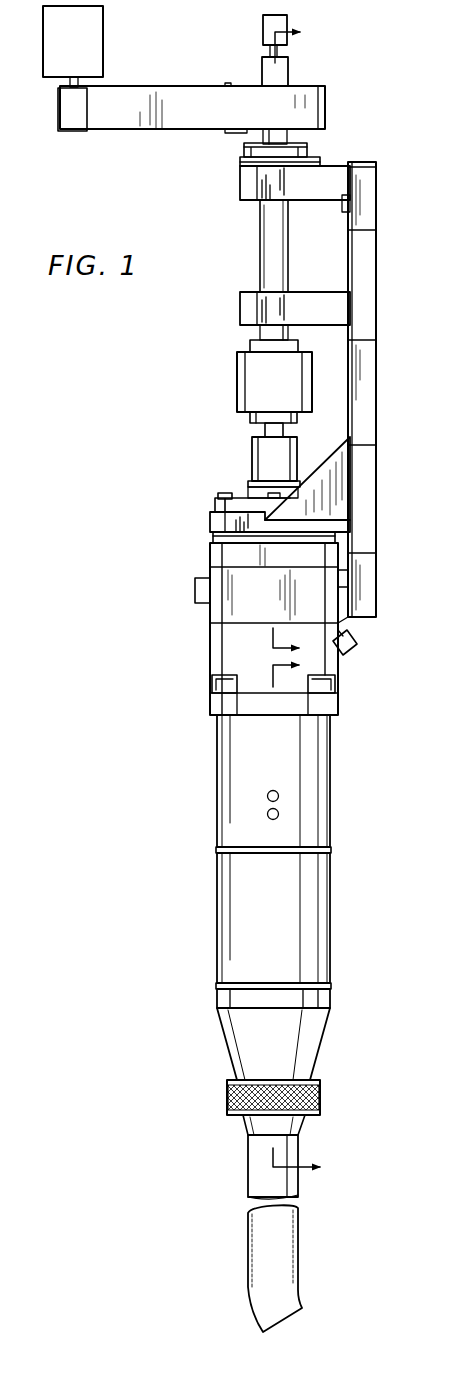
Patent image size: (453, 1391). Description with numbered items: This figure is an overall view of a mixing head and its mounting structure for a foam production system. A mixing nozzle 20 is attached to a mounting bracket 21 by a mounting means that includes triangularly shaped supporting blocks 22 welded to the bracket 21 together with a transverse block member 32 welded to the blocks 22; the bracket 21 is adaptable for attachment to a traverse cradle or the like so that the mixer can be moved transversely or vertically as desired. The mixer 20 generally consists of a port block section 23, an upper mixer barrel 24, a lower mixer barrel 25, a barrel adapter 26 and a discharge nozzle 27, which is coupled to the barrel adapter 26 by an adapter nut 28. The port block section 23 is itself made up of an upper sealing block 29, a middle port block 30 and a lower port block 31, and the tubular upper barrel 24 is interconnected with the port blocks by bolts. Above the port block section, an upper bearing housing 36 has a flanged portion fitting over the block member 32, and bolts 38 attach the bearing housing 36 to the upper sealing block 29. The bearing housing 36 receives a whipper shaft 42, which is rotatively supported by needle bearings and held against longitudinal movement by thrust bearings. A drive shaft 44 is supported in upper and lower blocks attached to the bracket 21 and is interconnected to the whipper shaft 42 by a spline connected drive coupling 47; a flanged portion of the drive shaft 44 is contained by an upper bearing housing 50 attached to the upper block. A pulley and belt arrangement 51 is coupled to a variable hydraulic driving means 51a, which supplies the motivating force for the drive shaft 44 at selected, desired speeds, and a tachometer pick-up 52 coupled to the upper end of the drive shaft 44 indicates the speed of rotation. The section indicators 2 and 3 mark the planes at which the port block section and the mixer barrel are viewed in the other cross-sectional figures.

The mixing nozzle 20 is at (202, 770).
The mounting bracket 21 is at (383, 414).
The triangularly shaped supporting blocks 22 is at (337, 497).
The port block section 23 is at (204, 617).
The upper mixer barrel 24 is at (217, 823).
The lower mixer barrel 25 is at (217, 935).
The barrel adapter 26 is at (225, 1040).
The discharge nozzle 27 is at (248, 1245).
The adapter nut 28 is at (227, 1100).
The upper sealing block 29 is at (210, 553).
The middle port block 30 is at (349, 626).
The lower port block 31 is at (208, 658).
The transverse block member 32 is at (210, 522).
The upper bearing housing 36 is at (252, 458).
The bolts 38 is at (218, 494).
The whipper shaft 42 is at (264, 430).
The drive shaft 44 is at (260, 245).
The spline connected drive coupling 47 is at (237, 378).
The upper bearing housing 50 is at (308, 147).
The pulley and belt arrangement 51 is at (334, 100).
The variable hydraulic driving means 51a is at (105, 33).
The tachometer pick-up 52 is at (262, 23).
The section line 2- 2 is at (302, 338).
The section line 3- 3 is at (307, 917).